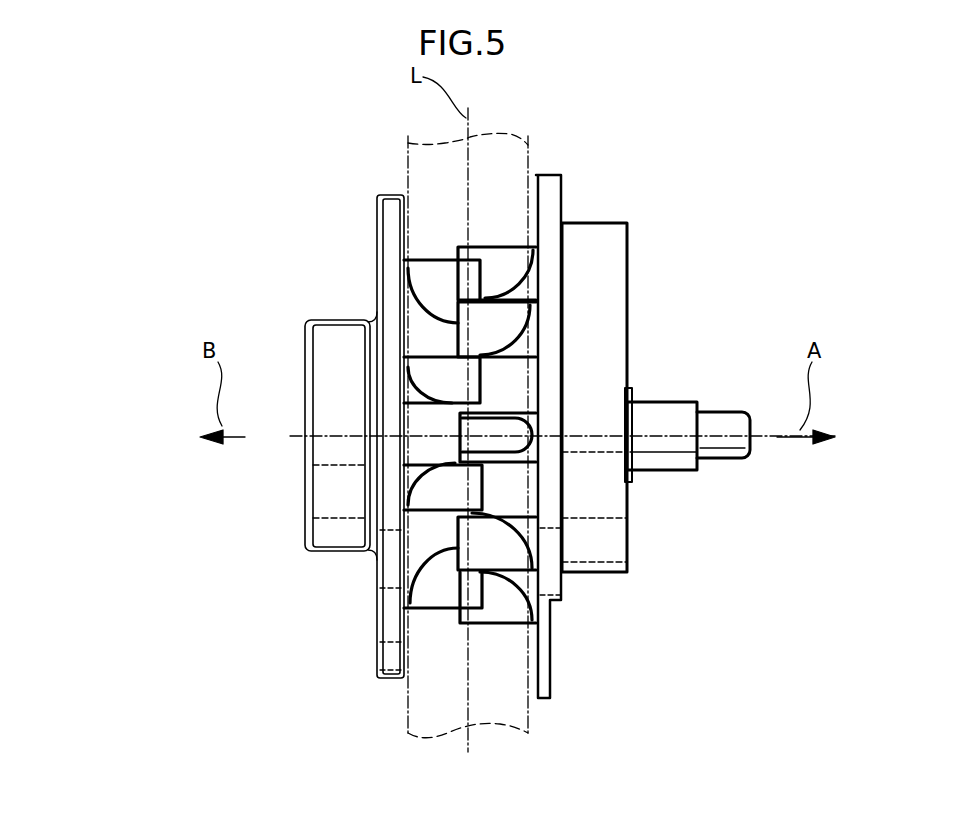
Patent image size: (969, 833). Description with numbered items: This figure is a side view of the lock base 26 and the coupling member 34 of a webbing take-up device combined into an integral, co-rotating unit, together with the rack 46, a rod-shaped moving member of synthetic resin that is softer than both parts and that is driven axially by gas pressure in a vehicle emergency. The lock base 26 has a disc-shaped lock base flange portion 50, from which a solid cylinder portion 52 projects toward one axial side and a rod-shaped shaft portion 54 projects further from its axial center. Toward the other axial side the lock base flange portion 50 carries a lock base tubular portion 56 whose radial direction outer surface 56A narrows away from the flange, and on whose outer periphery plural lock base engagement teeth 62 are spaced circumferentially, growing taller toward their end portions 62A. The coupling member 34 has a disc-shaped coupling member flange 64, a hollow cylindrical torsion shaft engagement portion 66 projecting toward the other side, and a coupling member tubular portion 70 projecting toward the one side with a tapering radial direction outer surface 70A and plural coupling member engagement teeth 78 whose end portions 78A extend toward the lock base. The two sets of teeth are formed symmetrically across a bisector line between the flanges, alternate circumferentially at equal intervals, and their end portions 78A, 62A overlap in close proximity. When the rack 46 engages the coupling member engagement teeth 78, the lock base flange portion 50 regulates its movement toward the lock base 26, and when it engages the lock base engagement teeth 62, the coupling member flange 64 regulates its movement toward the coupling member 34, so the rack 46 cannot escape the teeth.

The lock base 26 is at (620, 188).
The coupling member 34 is at (322, 298).
The rack 46 is at (509, 136).
The lock base flange portion 50 is at (551, 175).
The solid cylinder portion 52 is at (627, 250).
The shaft portion 54 is at (717, 420).
The lock base tubular portion 56 is at (581, 435).
The radial direction outer surface 56A is at (517, 395).
The lock base engagement teeth 62 is at (510, 297).
The end portions 62A is at (437, 300).
The coupling member flange 64 is at (390, 194).
The torsion shaft engagement portion 66 is at (305, 324).
The coupling member tubular portion 70 is at (476, 418).
The radial direction outer surface 70A is at (432, 446).
The coupling member engagement teeth 78 is at (465, 350).
The end portions 78A is at (473, 376).